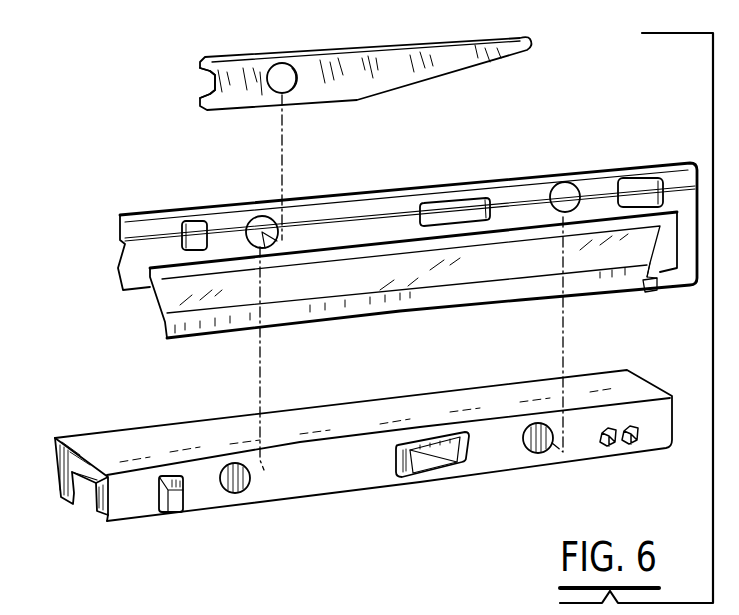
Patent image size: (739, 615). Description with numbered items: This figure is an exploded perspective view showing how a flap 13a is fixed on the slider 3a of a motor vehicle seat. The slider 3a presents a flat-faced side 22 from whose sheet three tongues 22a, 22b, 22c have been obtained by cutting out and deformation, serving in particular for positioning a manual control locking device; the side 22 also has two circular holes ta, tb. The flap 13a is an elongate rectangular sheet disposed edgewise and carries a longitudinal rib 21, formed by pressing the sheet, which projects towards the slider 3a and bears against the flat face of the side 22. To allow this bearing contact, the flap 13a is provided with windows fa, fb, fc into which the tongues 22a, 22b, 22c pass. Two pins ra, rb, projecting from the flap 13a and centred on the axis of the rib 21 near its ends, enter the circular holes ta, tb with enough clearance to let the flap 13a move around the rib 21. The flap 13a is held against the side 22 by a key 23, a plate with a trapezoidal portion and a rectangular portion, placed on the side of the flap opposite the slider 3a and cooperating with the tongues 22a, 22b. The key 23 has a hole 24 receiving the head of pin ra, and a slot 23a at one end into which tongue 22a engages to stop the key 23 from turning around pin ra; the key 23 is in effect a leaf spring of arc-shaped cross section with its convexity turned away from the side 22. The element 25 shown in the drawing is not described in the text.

The slider 3a is at (363, 461).
The side of the slider 22 is at (337, 475).
The tongue 22a is at (173, 507).
The tongue 22b is at (425, 457).
The tongue 22c is at (635, 443).
The longitudinal rib 21 is at (142, 238).
The flap 13a is at (342, 218).
The key 23 is at (377, 67).
The slot 23a is at (202, 88).
The hole 24 is at (292, 72).
The glass plate 25 is at (450, 275).
The window fa is at (189, 233).
The window fb is at (450, 217).
The window fc is at (648, 192).
The pin ra is at (263, 227).
The pin rb is at (563, 187).
The circular hole ta is at (240, 493).
The circular hole tb is at (542, 452).